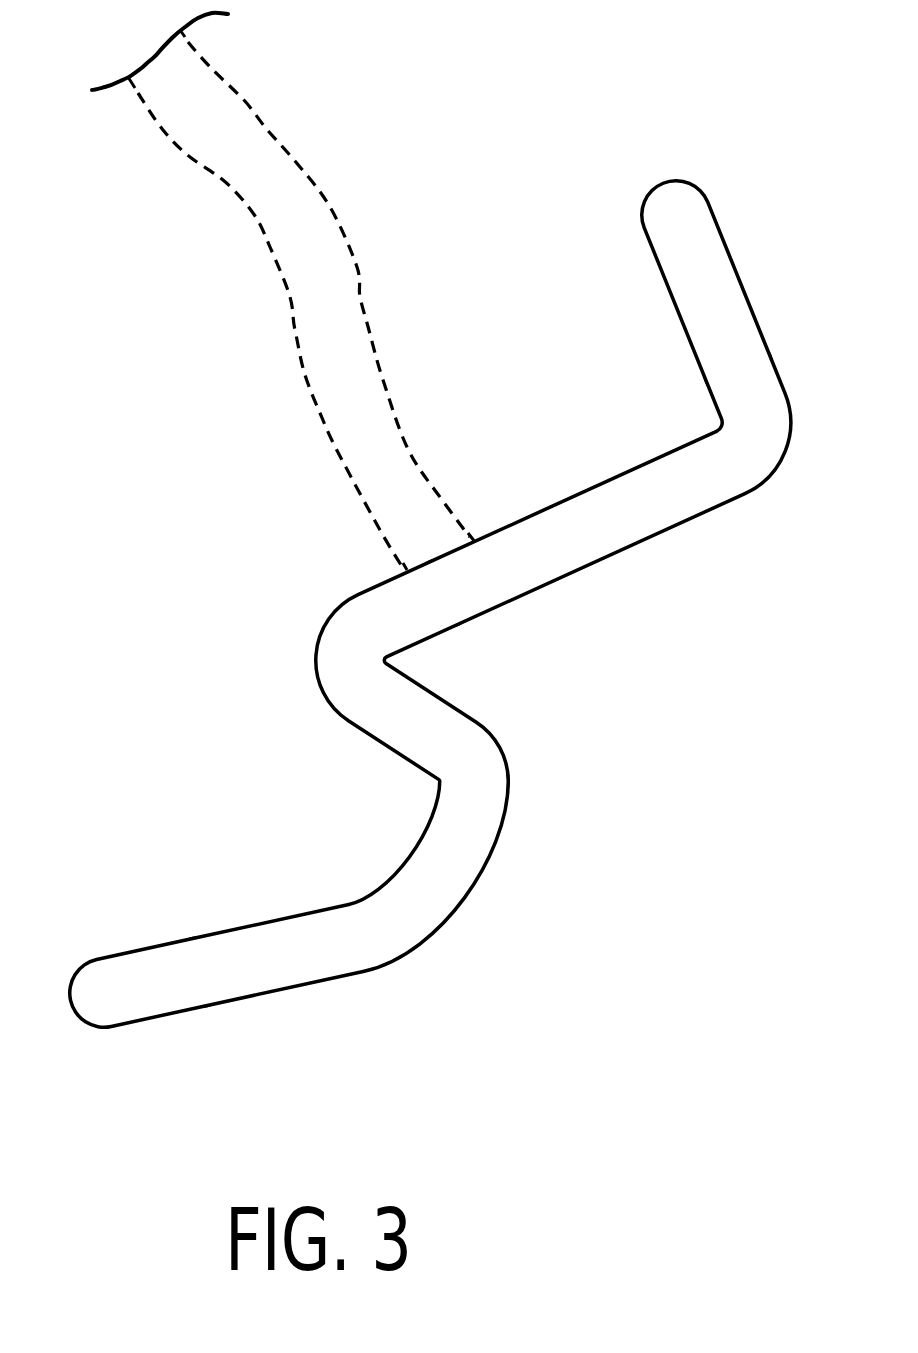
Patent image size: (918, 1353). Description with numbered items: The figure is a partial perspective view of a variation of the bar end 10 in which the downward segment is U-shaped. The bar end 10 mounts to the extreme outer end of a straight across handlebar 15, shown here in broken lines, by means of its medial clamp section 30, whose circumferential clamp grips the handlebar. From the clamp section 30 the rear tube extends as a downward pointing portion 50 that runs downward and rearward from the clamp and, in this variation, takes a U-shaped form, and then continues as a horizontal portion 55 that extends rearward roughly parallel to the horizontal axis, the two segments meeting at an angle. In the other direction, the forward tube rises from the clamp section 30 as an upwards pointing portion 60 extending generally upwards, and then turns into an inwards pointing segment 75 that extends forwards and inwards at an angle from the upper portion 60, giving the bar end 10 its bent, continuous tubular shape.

The bar end 10 is at (453, 639).
The handlebar 15 is at (272, 74).
The clamp section 30 is at (405, 573).
The downward pointing portion 50 is at (488, 867).
The horizontal portion 55 is at (185, 1015).
The upwards pointing portion 60 is at (643, 543).
The inwards pointing segment 75 is at (723, 233).